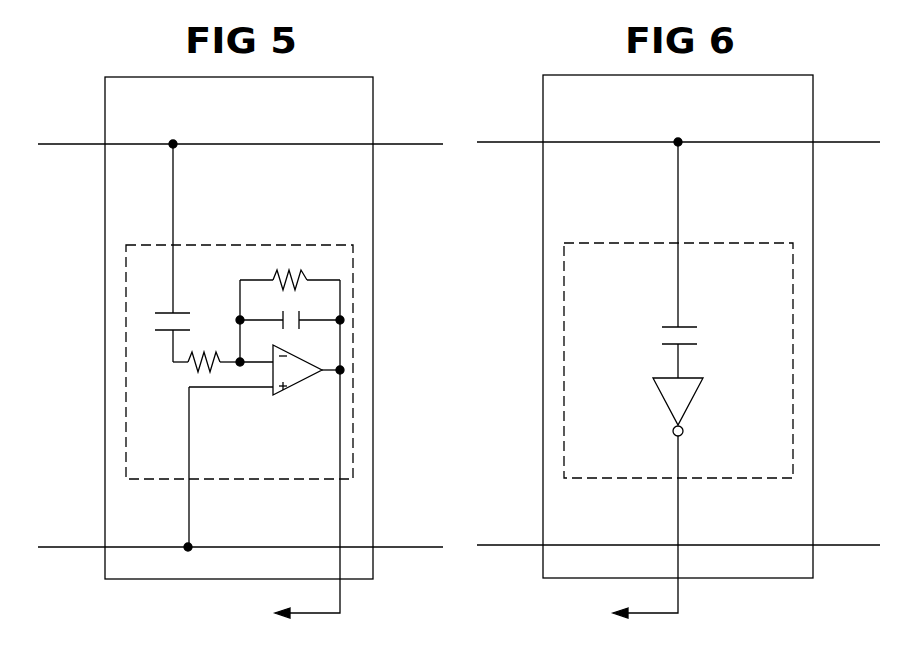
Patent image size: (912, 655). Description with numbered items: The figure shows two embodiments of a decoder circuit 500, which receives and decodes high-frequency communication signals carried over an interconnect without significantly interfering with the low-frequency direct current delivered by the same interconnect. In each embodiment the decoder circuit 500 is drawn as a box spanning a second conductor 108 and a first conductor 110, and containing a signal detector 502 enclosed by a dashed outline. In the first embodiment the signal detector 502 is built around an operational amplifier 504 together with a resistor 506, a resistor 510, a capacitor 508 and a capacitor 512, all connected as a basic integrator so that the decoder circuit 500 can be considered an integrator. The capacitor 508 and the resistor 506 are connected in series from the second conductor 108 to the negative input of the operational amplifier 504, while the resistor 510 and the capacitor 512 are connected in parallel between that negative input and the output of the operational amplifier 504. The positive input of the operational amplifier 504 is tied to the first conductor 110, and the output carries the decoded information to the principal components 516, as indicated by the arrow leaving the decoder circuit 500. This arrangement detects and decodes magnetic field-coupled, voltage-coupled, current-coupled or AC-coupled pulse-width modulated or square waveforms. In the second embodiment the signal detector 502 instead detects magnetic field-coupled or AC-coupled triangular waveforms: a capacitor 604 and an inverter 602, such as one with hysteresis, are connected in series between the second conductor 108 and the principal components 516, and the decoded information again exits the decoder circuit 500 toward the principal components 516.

In FIG. 5, the decoder circuit 500 is at (397, 33).
In FIG. 6, the decoder circuit 500 is at (818, 30).
In FIG. 5, the second conductor 108 is at (74, 143).
In FIG. 6, the second conductor 108 is at (512, 142).
In FIG. 5, the first conductor 110 is at (74, 546).
In FIG. 6, the first conductor 110 is at (512, 544).
In FIG. 5, the signal detector 502 is at (274, 245).
In FIG. 6, the signal detector 502 is at (803, 200).
In FIG. 5, the operational amplifier 504 is at (290, 390).
In FIG. 5, the resistor 506 is at (196, 362).
In FIG. 5, the capacitor 508 is at (178, 321).
In FIG. 5, the resistor 510 is at (281, 253).
In FIG. 5, the capacitor 512 is at (292, 318).
In FIG. 5, the principal components 516 is at (138, 646).
In FIG. 6, the principal components 516 is at (454, 645).
In FIG. 6, the inverter 602 is at (660, 388).
In FIG. 6, the capacitor 604 is at (666, 332).